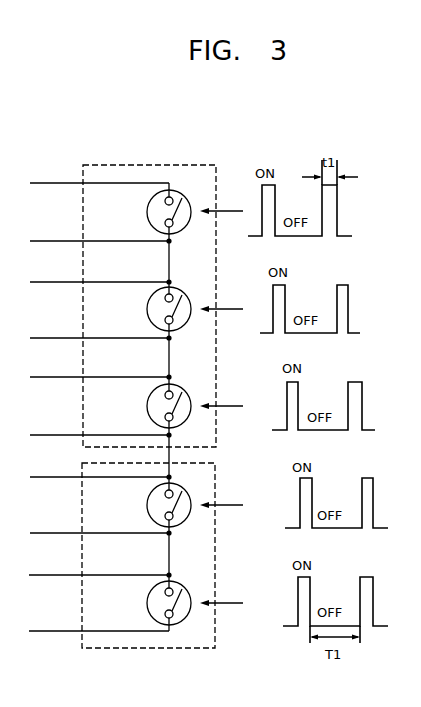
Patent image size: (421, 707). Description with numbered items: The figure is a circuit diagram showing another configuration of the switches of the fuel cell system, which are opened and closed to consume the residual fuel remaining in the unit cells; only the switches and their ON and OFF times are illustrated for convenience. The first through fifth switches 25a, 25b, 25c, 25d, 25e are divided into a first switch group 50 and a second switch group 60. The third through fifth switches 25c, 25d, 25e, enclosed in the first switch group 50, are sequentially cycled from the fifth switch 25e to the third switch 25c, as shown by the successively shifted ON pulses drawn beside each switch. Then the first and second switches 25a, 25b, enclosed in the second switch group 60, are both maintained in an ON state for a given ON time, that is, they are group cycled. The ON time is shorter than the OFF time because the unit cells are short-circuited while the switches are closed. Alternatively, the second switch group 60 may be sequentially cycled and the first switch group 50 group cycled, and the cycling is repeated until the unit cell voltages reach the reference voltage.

The first switch 25a is at (147, 603).
The second switch 25b is at (147, 505).
The third switch 25c is at (147, 406).
The fourth switch 25d is at (147, 309).
The fifth switch 25e is at (147, 212).
The first switch group 50 is at (153, 165).
The second switch group 60 is at (147, 648).